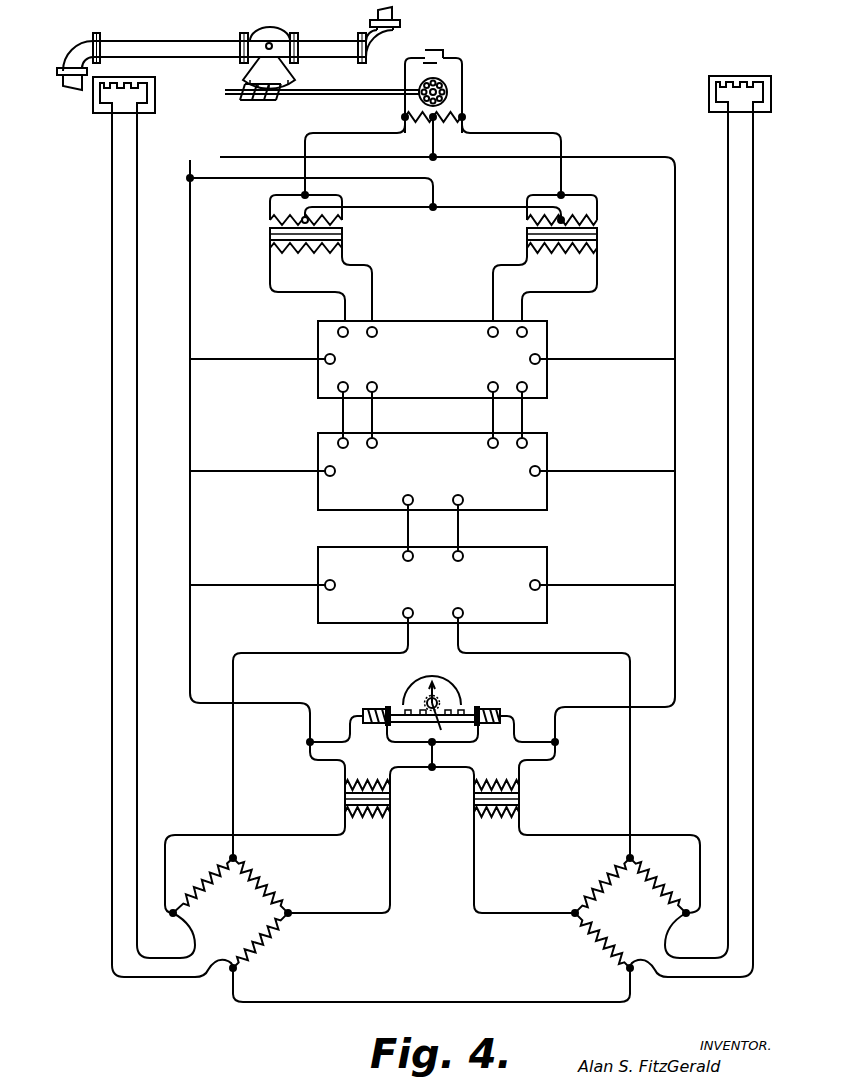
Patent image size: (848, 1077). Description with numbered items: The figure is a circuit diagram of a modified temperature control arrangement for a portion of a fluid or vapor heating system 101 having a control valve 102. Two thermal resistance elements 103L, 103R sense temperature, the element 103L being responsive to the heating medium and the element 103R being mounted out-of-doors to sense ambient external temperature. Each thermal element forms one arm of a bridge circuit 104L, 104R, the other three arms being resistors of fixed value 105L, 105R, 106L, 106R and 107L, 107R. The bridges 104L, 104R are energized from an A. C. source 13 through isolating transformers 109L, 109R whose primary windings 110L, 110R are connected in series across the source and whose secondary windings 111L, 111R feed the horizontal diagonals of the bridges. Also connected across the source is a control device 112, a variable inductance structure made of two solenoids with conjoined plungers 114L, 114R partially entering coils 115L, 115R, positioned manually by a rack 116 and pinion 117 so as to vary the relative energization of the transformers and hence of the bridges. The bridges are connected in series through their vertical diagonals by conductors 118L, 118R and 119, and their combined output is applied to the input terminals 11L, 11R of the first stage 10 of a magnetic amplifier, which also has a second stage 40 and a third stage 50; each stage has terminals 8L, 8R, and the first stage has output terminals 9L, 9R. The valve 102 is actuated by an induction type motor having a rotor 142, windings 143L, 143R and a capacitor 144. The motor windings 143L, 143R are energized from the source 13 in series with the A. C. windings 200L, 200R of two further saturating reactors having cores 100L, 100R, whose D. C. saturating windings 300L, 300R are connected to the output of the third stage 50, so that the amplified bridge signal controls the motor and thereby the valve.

The fluid or vapor heating system 101 is at (215, 45).
The control valve 102 is at (322, 54).
The thermal resistance element 103L is at (144, 95).
The thermal resistance element 103R is at (718, 83).
The A. C. source 13 is at (435, 435).
The capacitor 144 is at (438, 46).
The rotor 142 is at (447, 91).
The motor winding 143L is at (369, 153).
The motor winding 143R is at (495, 153).
The A. C. winding 200L is at (326, 207).
The A. C. winding 200R is at (535, 207).
The core 100L is at (282, 238).
The core 100R is at (584, 238).
The D. C. saturating winding 300L is at (321, 282).
The D. C. saturating winding 300R is at (545, 282).
The third stage 50 is at (446, 370).
The second stage 40 is at (446, 482).
The first stage 10 is at (446, 596).
The terminal 8L is at (274, 472).
The terminal 8R is at (587, 472).
The input terminal 11L is at (392, 557).
The input terminal 11R is at (475, 557).
The output terminal 9L is at (327, 629).
The output terminal 9R is at (537, 629).
The conductor 118L is at (222, 755).
The conductor 118R is at (649, 755).
The control device 112 is at (488, 689).
The pinion 117 is at (451, 721).
The rack 116 is at (403, 724).
The coil 115L is at (363, 710).
The coil 115R is at (500, 710).
The plunger 114L is at (363, 722).
The plunger 114R is at (500, 722).
The primary winding 110L is at (367, 778).
The primary winding 110R is at (496, 778).
The isolating transformer 109L is at (334, 806).
The isolating transformer 109R is at (566, 806).
The secondary winding 111L is at (277, 860).
The secondary winding 111R is at (587, 860).
The bridge circuit 104L is at (233, 912).
The bridge circuit 104R is at (624, 912).
The fixed resistor 105L is at (262, 885).
The fixed resistor 105R is at (598, 885).
The fixed resistor 106L is at (203, 885).
The fixed resistor 106R is at (658, 885).
The fixed resistor 107L is at (213, 921).
The fixed resistor 107R is at (650, 921).
The conductor 119 is at (431, 985).